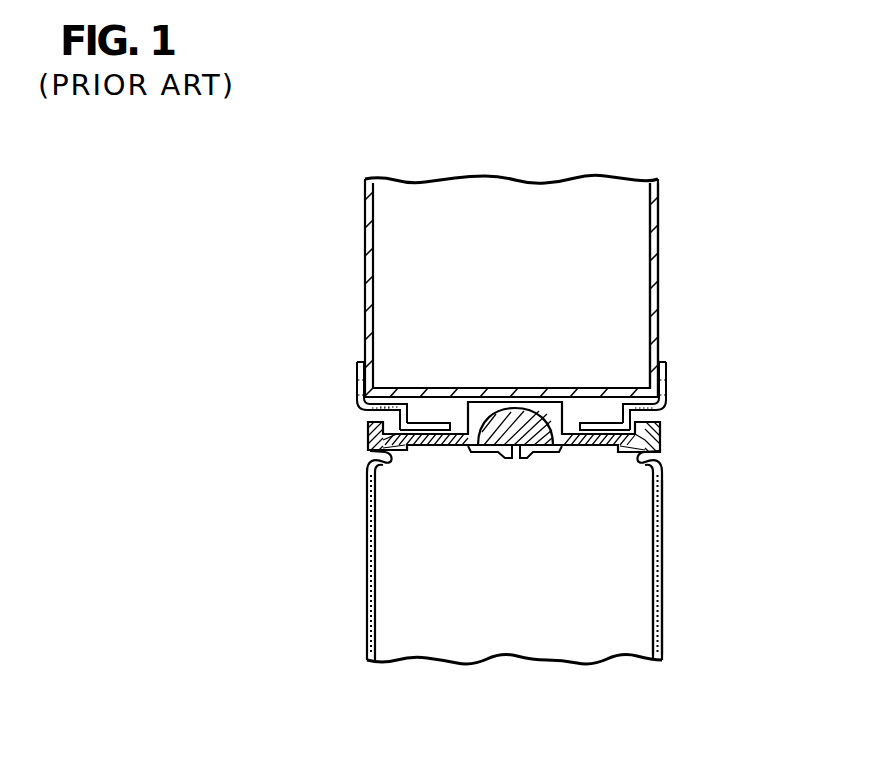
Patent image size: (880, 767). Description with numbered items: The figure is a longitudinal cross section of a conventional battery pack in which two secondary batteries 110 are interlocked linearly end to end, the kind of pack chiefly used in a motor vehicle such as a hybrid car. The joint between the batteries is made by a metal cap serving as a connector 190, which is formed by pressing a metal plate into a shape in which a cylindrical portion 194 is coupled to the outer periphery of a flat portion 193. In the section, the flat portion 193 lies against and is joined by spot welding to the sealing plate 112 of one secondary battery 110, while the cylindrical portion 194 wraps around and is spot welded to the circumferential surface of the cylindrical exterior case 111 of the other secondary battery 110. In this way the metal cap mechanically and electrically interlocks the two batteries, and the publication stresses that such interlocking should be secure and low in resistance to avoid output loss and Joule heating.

The secondary battery 110 is at (671, 213).
The cylindrical exterior case 111 is at (659, 283).
The sealing plate 112 is at (584, 447).
The connector 190 is at (679, 395).
The flat portion 193 is at (432, 420).
The cylindrical portion 194 is at (357, 380).